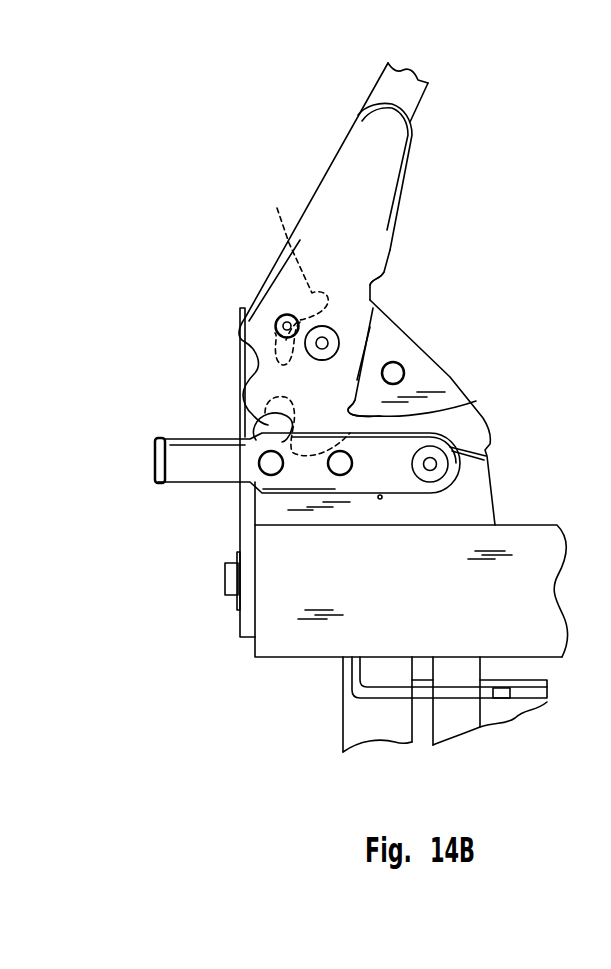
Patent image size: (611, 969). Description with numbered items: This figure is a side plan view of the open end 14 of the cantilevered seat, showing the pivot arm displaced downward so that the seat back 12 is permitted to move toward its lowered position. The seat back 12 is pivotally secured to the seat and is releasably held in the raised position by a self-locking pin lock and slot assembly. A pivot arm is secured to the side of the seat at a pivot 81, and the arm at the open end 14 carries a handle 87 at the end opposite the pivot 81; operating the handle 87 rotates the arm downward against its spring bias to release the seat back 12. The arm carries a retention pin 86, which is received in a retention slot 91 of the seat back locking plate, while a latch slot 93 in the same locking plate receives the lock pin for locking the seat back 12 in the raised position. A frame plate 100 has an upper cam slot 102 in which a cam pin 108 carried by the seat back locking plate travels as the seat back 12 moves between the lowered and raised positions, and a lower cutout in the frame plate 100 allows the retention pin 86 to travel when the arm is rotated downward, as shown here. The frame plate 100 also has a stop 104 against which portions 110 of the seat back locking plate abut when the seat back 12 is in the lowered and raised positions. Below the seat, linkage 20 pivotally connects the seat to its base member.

The seat back 12 is at (422, 98).
The open end 14 is at (425, 607).
The linkage 20 is at (467, 730).
The pivot 81 is at (432, 472).
The retention pin 86 is at (259, 464).
The handle 87 is at (158, 438).
The retention slot 91 is at (248, 368).
The latch slot 93 is at (254, 410).
The frame plate 100 is at (450, 377).
The upper cam slot 102 is at (304, 318).
The stop 104 is at (400, 362).
The cam pin 108 is at (280, 316).
The portions of the seat back locking plate 110 is at (390, 293).